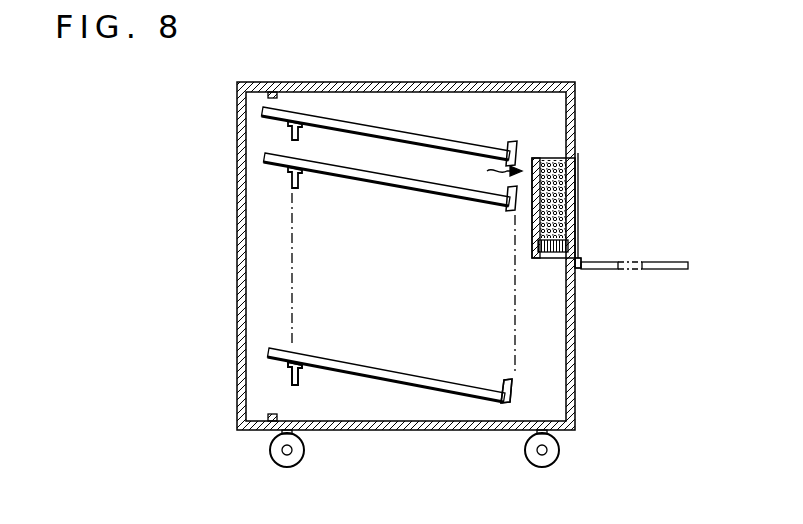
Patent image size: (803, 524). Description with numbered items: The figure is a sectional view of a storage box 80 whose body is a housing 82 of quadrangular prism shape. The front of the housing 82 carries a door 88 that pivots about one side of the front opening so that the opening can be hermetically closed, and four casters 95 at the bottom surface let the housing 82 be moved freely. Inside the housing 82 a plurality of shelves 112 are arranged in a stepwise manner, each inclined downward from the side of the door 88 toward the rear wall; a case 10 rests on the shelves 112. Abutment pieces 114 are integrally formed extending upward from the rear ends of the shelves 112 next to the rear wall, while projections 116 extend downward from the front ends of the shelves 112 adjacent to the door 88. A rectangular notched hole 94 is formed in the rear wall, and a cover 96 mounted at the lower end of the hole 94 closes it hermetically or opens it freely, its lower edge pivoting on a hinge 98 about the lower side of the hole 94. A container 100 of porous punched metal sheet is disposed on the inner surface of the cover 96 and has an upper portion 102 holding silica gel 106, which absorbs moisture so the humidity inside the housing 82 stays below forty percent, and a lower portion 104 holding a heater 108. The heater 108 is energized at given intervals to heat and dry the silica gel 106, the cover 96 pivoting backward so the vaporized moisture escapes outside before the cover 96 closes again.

The cabinet housing 80 is at (410, 218).
The housing 82 is at (374, 219).
The door 88 is at (237, 288).
The notched hole 94 is at (546, 199).
The casters 95 is at (288, 468).
The cover 96 is at (572, 199).
The hinge 98 is at (580, 268).
The container 100 is at (482, 170).
The upper portion 102 is at (546, 199).
The lower portion 104 is at (546, 199).
The silica gel 106 is at (546, 199).
The heater 108 is at (538, 258).
The case 10 is at (450, 138).
The shelves 112 is at (390, 252).
The abutment pieces 114 is at (512, 392).
The projections 116 is at (288, 375).